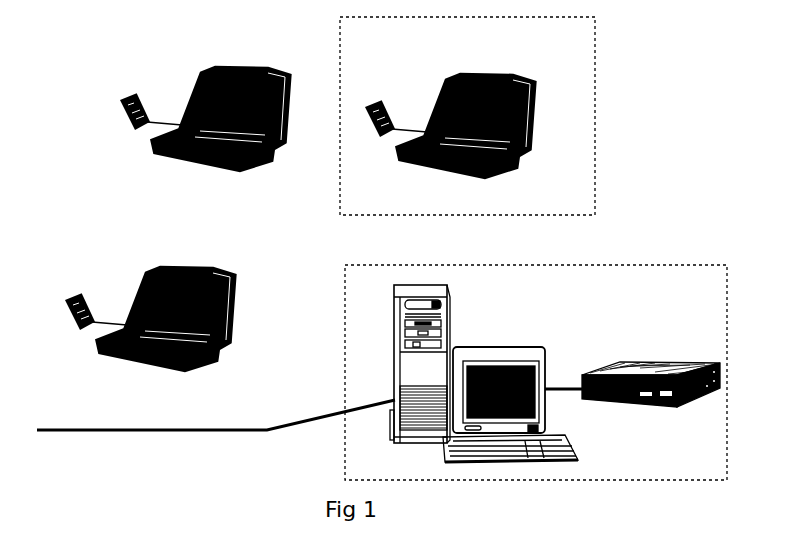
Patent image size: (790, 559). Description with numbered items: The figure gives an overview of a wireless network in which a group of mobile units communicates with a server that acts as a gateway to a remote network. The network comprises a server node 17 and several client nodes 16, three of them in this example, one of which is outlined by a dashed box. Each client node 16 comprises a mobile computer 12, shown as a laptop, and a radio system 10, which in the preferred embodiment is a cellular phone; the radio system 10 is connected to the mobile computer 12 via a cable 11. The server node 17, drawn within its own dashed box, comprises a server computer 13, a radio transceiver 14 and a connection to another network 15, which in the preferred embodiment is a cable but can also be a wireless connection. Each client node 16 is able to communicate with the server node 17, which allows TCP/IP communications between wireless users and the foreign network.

The radio system 10 is at (382, 103).
The cable 11 is at (395, 128).
The mobile computer 12 is at (520, 77).
The server computer 13 is at (498, 345).
The radio transceiver 14 is at (630, 360).
The connection to another network 15 is at (257, 433).
The client node 16 is at (595, 170).
The server node 17 is at (345, 327).